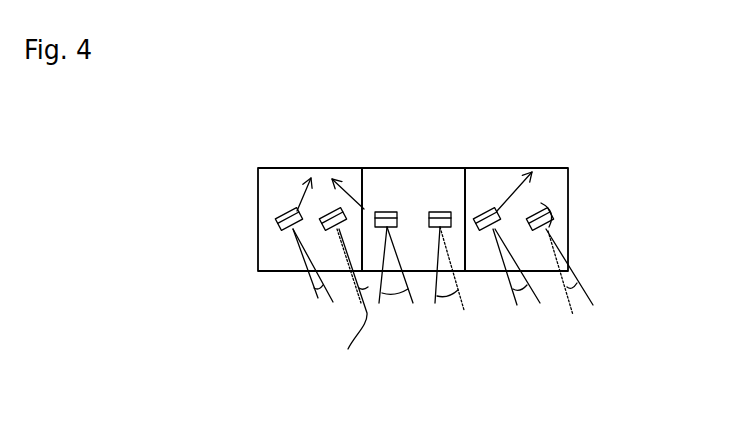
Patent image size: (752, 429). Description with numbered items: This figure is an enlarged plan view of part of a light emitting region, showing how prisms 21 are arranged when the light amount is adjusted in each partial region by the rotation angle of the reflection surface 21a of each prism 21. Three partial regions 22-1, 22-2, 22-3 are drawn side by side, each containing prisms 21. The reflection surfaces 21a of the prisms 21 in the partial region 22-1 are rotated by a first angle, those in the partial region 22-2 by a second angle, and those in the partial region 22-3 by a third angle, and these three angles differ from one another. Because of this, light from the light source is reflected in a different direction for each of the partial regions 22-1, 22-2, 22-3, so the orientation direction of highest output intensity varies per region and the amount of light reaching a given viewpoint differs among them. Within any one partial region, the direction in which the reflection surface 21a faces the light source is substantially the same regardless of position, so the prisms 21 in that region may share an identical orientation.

The partial region 22-1 is at (297, 178).
The partial region 22-2 is at (416, 180).
The partial region 22-3 is at (511, 180).
The prism 21 is at (548, 204).
The reflection surface 21a is at (550, 227).